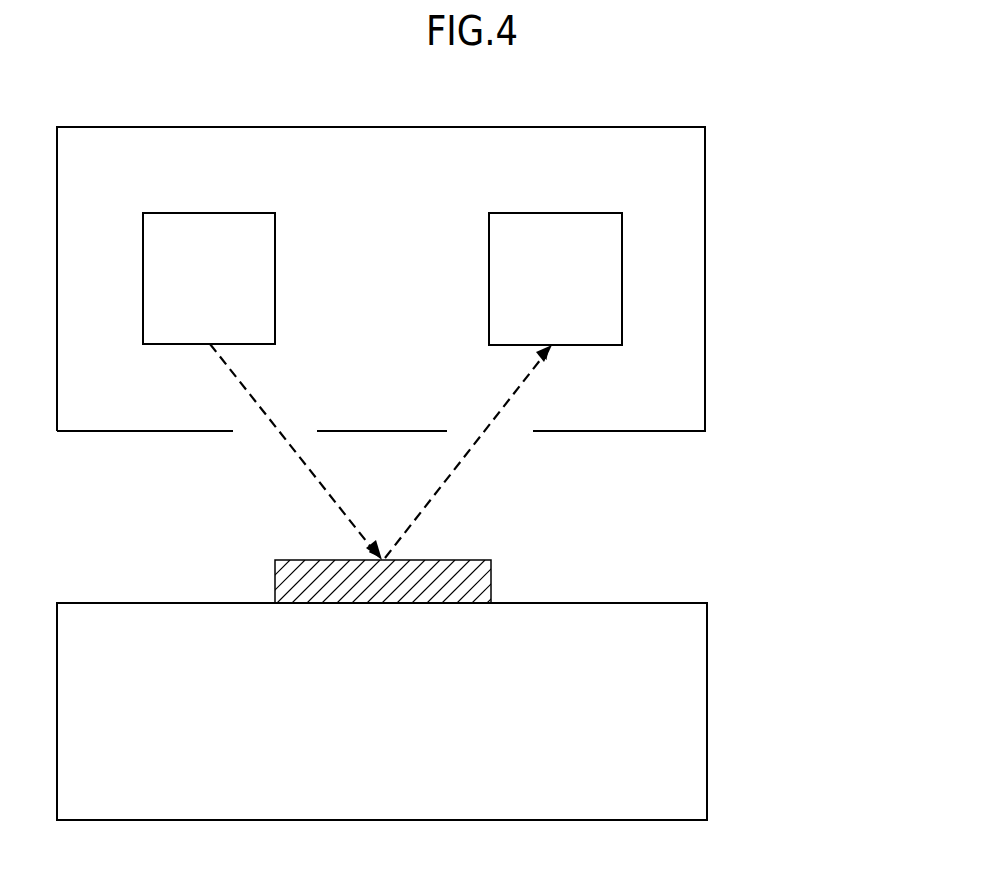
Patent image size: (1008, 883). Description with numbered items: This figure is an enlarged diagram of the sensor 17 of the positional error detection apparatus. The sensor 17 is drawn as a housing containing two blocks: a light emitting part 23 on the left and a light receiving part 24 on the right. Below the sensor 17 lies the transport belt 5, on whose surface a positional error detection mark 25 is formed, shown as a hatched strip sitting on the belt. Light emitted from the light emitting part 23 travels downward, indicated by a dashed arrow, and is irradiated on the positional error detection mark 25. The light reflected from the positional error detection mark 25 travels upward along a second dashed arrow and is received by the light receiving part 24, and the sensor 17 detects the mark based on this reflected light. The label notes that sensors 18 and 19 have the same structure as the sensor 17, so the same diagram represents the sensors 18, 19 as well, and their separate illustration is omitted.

The transport belt 5 is at (670, 602).
The sensor 17 is at (474, 279).
The sensor 18 is at (381, 279).
The sensor 19 is at (706, 289).
The light emitting part 23 is at (276, 243).
The light receiving part 24 is at (623, 243).
The positional error detection mark 25 is at (497, 602).